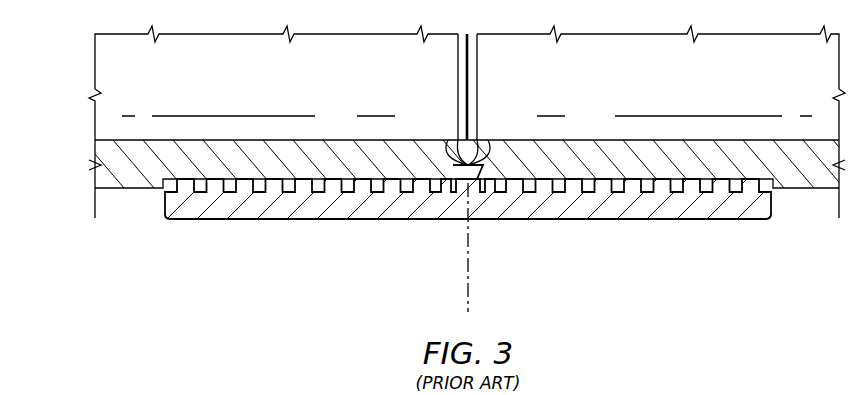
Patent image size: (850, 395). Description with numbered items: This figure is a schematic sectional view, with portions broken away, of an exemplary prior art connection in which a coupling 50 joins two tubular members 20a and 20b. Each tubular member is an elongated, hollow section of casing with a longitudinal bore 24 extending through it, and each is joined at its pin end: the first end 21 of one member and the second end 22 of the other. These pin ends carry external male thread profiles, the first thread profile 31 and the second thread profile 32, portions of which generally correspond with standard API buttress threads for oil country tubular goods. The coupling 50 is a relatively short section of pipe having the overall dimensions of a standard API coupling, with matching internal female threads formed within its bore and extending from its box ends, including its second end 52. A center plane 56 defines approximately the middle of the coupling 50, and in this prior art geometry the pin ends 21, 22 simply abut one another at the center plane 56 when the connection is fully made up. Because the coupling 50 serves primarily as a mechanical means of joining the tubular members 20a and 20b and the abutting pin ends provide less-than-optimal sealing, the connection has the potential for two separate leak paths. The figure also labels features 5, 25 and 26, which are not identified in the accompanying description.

The heat sink 5 is at (572, 221).
The tubular member 20a is at (139, 197).
The tubular member 20b is at (802, 197).
The first end 21 is at (347, 139).
The second end 22 is at (584, 139).
The longitudinal bore 24 is at (248, 97).
The dovetail cavity 25 is at (486, 166).
The joint between housing parts 26 is at (437, 140).
The first thread profile 31 is at (259, 194).
The second thread profile 32 is at (674, 189).
The coupling 50 is at (356, 230).
The second end 52 is at (776, 216).
The center plane 56 is at (471, 297).